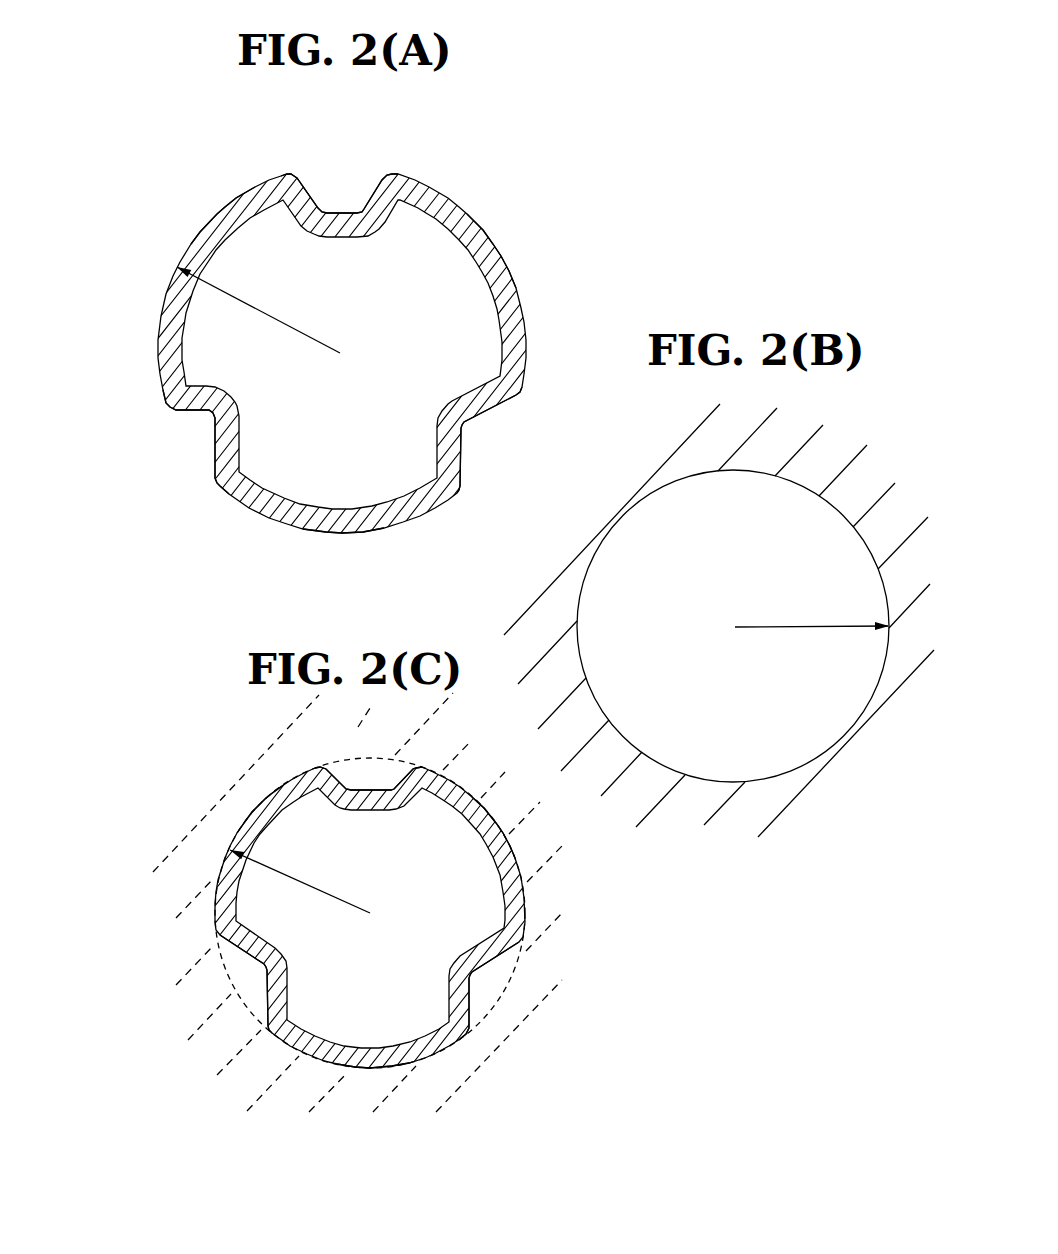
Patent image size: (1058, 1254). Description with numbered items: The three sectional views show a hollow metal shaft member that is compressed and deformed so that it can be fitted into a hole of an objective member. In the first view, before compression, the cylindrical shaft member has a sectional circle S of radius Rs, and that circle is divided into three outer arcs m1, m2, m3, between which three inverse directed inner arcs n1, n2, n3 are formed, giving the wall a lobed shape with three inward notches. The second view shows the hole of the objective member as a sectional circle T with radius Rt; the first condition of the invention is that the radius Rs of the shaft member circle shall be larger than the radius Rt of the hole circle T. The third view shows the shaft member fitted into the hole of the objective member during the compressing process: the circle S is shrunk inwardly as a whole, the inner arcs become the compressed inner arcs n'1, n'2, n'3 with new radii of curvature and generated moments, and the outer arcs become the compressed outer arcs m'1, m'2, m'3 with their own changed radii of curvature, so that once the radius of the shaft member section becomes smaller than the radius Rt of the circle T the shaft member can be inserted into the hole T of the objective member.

In FIG. 2A, the inner arc n1 is at (343, 209).
In FIG. 2A, the inner arc n2 is at (524, 448).
In FIG. 2A, the inner arc n3 is at (240, 403).
In FIG. 2A, the outer arc m1 is at (475, 222).
In FIG. 2A, the outer arc m2 is at (373, 525).
In FIG. 2A, the outer arc m3 is at (207, 222).
In FIG. 2A, the radius of the circle S Rs is at (193, 267).
In FIG. 2B, the radius of the circle T Rt is at (737, 628).
In FIG. 2C, the radius of the circle T Rt is at (238, 846).
In FIG. 2B, the circle of the hole T is at (742, 554).
In FIG. 2C, the compressed inner arc n'1 is at (370, 822).
In FIG. 2C, the compressed inner arc n'2 is at (431, 974).
In FIG. 2C, the compressed inner arc n'3 is at (285, 984).
In FIG. 2C, the compressed outer arc m'1 is at (551, 830).
In FIG. 2C, the compressed outer arc m'2 is at (364, 1134).
In FIG. 2C, the compressed outer arc m'3 is at (195, 861).